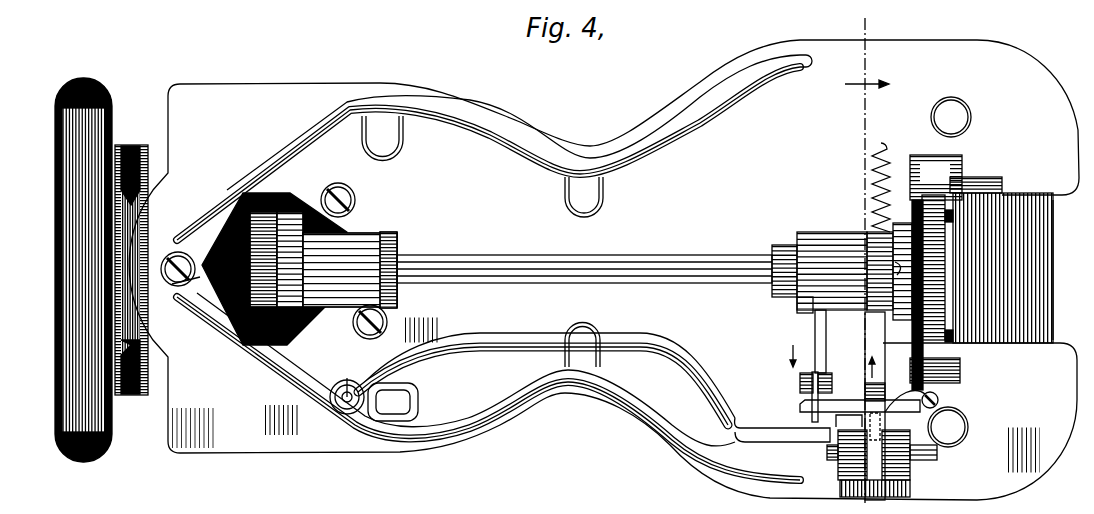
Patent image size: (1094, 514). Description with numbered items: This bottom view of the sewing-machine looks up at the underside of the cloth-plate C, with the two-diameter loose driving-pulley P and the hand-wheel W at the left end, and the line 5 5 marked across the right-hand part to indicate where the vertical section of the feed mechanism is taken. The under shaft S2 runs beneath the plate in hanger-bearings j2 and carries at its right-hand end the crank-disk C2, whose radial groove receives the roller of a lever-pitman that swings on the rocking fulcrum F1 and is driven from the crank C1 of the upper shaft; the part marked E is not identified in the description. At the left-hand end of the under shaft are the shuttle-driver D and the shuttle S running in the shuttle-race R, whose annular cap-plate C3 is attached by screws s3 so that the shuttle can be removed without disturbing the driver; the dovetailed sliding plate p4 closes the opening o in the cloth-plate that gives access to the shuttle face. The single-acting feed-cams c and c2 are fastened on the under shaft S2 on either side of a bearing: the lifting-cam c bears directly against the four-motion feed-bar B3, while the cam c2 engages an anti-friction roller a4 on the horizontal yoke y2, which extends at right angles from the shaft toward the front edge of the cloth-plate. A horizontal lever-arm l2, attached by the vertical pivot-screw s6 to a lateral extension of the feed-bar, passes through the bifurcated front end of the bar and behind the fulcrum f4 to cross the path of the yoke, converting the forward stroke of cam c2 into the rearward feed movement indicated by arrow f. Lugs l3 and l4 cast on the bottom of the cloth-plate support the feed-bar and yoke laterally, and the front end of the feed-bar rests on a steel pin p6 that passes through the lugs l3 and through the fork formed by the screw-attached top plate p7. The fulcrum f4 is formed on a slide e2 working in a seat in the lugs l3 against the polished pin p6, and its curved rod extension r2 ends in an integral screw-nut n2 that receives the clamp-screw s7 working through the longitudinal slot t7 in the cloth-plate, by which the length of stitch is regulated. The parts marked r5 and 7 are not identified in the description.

The hand-wheel W is at (71, 270).
The loose driving-pulley P is at (131, 259).
The cloth-plate C is at (604, 270).
The opening o is at (1060, 270).
The cone holder block E is at (274, 269).
The crank-disk C2 is at (337, 260).
The hanger-bearing j2 is at (354, 261).
The rocking fulcrum F1 is at (206, 262).
The crank C1 is at (176, 287).
The under shaft S2 is at (584, 258).
The rod extension r2 is at (546, 370).
The screw-nut n2 is at (341, 394).
The clamp-screw s7 is at (351, 378).
The longitudinal slot t7 is at (393, 402).
The slide e2 is at (782, 430).
The feed-cam c2 is at (792, 262).
The cylinder r5 is at (832, 271).
The anti-friction roller a4 is at (799, 314).
The horizontal slide or yoke y2 is at (826, 366).
The feed-movement arrow f is at (790, 355).
The lug l4 is at (814, 383).
The horizontal lever-arm l2 is at (860, 398).
The top plate p7 is at (905, 396).
The vertical pivot-screw s6 is at (938, 401).
The fulcrum f4 is at (849, 418).
The four-motion feed-bar B3 is at (875, 406).
The lugs l3 is at (874, 463).
The steel pin p6 is at (872, 456).
The lifting-cam c is at (880, 271).
The shuttle-driver D is at (902, 271).
The shuttle S is at (900, 270).
The coil spring 7 is at (873, 187).
The shuttle-race R is at (936, 272).
The annular cap-plate C3 is at (933, 267).
The screws s3 is at (953, 216).
The sliding plate p4 is at (1001, 260).
The section line 5 is at (867, 257).